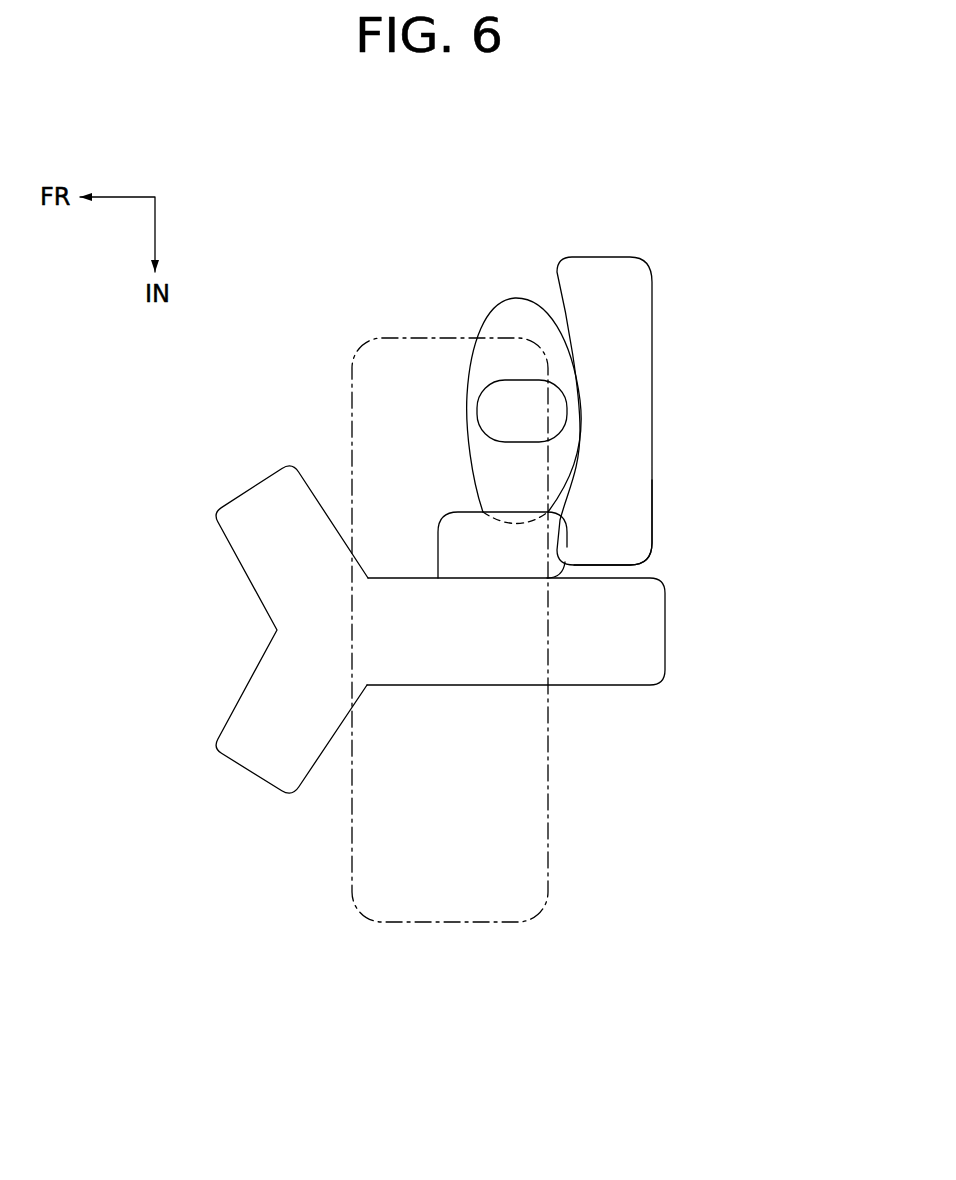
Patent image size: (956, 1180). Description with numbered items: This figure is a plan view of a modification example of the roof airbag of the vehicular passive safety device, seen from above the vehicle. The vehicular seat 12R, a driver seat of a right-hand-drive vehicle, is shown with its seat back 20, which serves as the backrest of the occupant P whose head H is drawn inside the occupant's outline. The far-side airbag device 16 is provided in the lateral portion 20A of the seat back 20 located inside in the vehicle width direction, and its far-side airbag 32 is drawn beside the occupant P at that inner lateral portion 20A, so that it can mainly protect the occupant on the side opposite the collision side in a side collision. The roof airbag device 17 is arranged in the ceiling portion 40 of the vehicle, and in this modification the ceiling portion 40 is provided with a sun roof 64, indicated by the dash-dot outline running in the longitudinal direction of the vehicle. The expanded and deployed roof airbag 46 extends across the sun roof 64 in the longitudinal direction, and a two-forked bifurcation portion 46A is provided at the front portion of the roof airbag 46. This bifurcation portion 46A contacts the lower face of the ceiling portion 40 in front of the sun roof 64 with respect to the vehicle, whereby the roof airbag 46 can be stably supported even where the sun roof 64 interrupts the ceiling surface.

The far-side airbag device 16 is at (410, 687).
The sun roof 64 is at (450, 687).
The ceiling portion 40 is at (430, 922).
The occupant P is at (510, 292).
The head H is at (477, 411).
The seat back 20 is at (692, 411).
The vehicular seat 12R is at (652, 360).
The lateral portion 20A is at (652, 548).
The far-side airbag 32 is at (438, 545).
The roof airbag device 17 is at (437, 629).
The roof airbag 46 is at (667, 632).
The bifurcation portion 46A is at (245, 682).